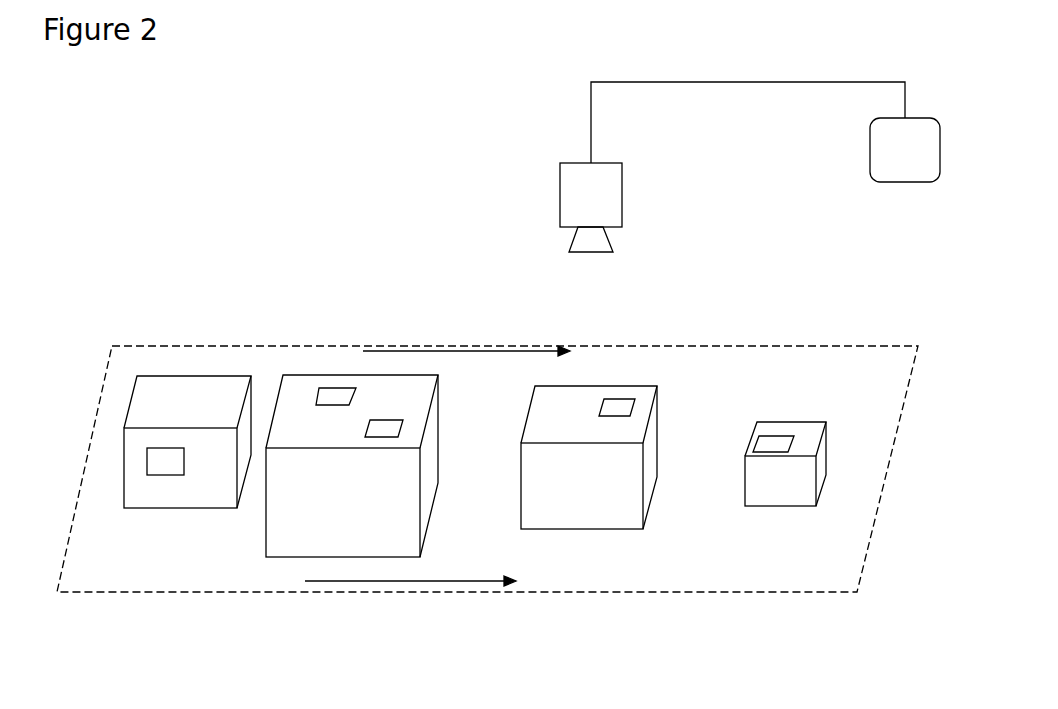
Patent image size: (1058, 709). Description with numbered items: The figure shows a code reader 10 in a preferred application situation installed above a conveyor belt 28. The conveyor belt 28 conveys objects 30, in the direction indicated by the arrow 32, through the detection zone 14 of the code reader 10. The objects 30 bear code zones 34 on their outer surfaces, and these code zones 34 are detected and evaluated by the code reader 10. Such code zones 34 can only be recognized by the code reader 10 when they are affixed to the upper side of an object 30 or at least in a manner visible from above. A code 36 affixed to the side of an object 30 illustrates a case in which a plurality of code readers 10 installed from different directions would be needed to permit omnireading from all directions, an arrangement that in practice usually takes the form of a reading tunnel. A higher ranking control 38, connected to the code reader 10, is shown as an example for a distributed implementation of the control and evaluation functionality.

The code reader 10 is at (608, 202).
The detection zone 14 is at (587, 312).
The conveyor belt 28 is at (828, 593).
The objects 30 is at (148, 388).
The arrow 32 is at (390, 583).
The code zones 34 is at (382, 427).
The code 36 is at (159, 462).
The higher ranking control 38 is at (908, 147).